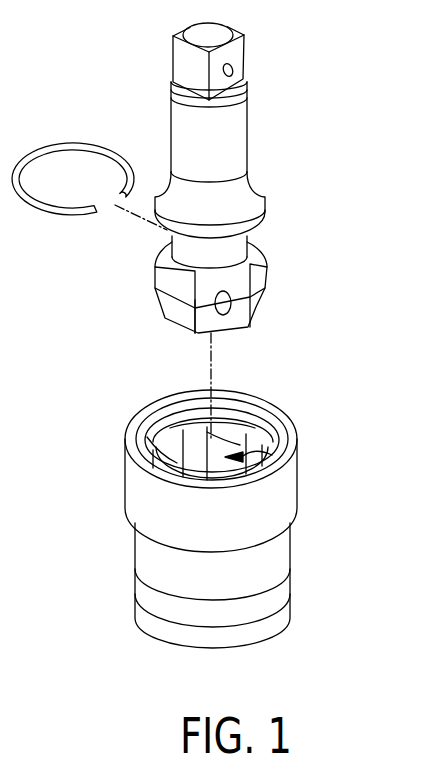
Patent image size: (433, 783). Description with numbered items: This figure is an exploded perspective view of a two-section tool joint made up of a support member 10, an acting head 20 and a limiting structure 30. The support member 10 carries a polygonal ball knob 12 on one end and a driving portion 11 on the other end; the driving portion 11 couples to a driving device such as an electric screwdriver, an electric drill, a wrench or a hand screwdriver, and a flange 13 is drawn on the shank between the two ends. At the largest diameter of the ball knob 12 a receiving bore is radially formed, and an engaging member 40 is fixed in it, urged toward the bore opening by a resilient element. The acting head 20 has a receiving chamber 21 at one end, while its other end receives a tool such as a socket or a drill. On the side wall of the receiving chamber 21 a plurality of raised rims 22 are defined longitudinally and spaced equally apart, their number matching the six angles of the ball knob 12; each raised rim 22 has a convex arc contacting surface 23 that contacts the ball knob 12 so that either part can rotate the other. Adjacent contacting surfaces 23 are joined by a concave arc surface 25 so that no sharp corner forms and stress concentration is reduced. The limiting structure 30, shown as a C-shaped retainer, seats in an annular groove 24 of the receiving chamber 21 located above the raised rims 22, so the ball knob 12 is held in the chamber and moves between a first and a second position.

The support member 10 is at (237, 123).
The driving portion 11 is at (219, 28).
The polygonal ball knob 12 is at (253, 292).
The flange 13 is at (250, 218).
The acting head 20 is at (263, 556).
The receiving chamber 21 is at (272, 455).
The raised rims 22 is at (142, 434).
The convex arc contacting surface 23 is at (173, 459).
The annular groove 24 is at (178, 410).
The concave arc surface 25 is at (250, 434).
The limiting structure 30 is at (43, 202).
The engaging member 40 is at (195, 314).